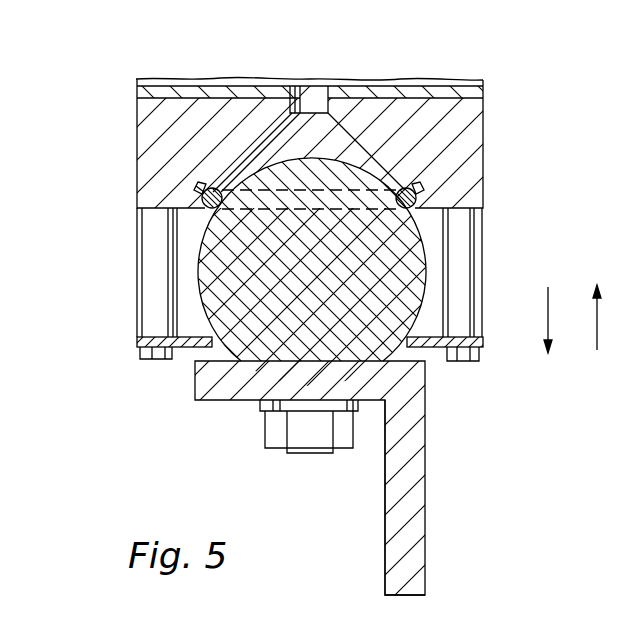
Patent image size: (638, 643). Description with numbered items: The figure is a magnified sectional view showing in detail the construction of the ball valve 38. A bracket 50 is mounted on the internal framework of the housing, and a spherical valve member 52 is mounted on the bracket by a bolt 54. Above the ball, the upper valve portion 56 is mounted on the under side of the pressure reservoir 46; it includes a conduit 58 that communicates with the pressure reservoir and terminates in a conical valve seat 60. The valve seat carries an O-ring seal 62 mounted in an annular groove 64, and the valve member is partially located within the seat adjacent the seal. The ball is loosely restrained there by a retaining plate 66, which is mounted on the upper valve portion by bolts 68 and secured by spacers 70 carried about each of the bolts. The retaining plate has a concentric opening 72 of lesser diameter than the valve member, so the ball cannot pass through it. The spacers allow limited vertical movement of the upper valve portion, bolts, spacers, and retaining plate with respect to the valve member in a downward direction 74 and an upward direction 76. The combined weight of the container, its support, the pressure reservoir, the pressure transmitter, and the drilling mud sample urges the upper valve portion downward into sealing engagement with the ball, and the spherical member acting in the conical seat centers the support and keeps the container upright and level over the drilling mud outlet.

The valve 38 is at (495, 244).
The pressure reservoir 46 is at (225, 79).
The bracket 50 is at (415, 500).
The valve member 52 is at (238, 332).
The bolt 54 is at (295, 428).
The upper valve portion 56 is at (462, 132).
The conduit 58 is at (328, 97).
The conical valve seat 60 is at (356, 139).
The O-ring seal 62 is at (203, 213).
The annular groove 64 is at (200, 188).
The retaining plate 66 is at (438, 342).
The bolts 68 is at (155, 360).
The spacers 70 is at (145, 295).
The concentric opening 72 is at (418, 313).
The downward direction 74 is at (549, 300).
The upward direction 76 is at (598, 300).